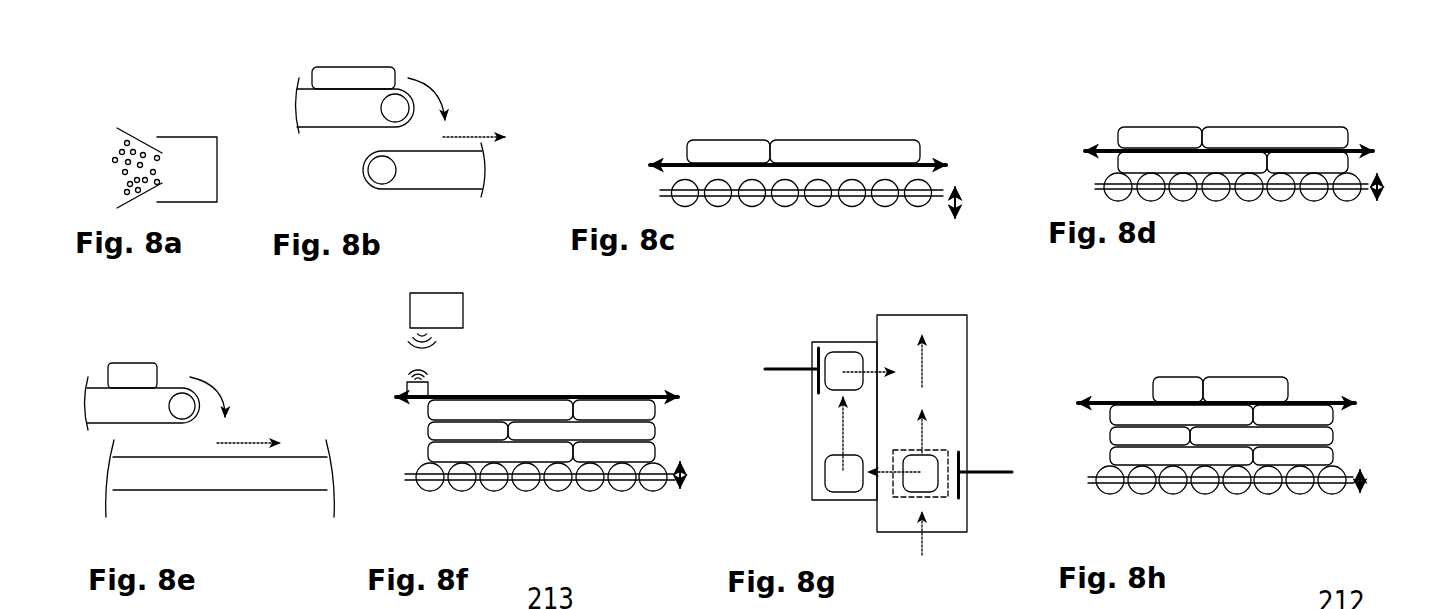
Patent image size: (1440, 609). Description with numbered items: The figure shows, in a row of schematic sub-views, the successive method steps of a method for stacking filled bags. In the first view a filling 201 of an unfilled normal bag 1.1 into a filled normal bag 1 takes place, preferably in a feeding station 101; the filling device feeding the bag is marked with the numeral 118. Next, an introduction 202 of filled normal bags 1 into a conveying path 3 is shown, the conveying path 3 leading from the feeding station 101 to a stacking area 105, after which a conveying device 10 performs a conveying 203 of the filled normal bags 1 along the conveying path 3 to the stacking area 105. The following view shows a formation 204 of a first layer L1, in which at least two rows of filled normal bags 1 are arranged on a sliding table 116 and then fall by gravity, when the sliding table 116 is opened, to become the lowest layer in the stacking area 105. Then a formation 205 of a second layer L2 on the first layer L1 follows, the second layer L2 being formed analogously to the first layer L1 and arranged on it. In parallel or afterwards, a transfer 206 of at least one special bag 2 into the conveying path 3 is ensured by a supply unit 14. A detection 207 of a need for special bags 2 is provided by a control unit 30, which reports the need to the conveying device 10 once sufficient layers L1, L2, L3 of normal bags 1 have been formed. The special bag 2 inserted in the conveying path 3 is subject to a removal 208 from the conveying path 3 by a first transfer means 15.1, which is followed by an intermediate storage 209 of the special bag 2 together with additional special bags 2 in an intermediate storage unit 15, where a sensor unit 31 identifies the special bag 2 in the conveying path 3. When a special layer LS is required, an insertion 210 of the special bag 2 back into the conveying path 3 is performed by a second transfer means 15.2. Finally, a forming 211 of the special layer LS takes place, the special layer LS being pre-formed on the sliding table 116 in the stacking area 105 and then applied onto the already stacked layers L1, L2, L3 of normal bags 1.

In FIG. 8A, the filling 201 is at (145, 62).
In FIG. 8A, the feeding device 118 is at (132, 137).
In FIG. 8A, the unfilled normal bag 1.1 is at (167, 137).
In FIG. 8B, the introduction 202 is at (343, 62).
In FIG. 8B, the filled normal bag 1 is at (382, 78).
In FIG. 8C, the filled normal bag 1 is at (788, 143).
In FIG. 8D, the filled normal bag 1 is at (1228, 137).
In FIG. 8B, the conveying 203 is at (482, 78).
In FIG. 8B, the conveying path 3 is at (460, 137).
In FIG. 8E, the conveying path 3 is at (233, 443).
In FIG. 8G, the conveying path 3 is at (927, 348).
In FIG. 8B, the feeding station 101 is at (342, 115).
In FIG. 8B, the conveying device 10 is at (432, 173).
In FIG. 8E, the conveying device 10 is at (187, 482).
In FIG. 8G, the conveying device 10 is at (957, 402).
In FIG. 8C, the formation of a first layer 204 is at (675, 82).
In FIG. 8C, the sliding table 116 is at (673, 160).
In FIG. 8D, the sliding table 116 is at (1108, 148).
In FIG. 8F, the sliding table 116 is at (478, 397).
In FIG. 8H, the sliding table 116 is at (1115, 400).
In FIG. 8C, the first layer L1 is at (912, 155).
In FIG. 8D, the first layer L1 is at (1333, 163).
In FIG. 8F, the first layer L1 is at (650, 453).
In FIG. 8H, the first layer L1 is at (1327, 457).
In FIG. 8C, the stacking area 105 is at (648, 193).
In FIG. 8D, the stacking area 105 is at (1078, 185).
In FIG. 8F, the stacking area 105 is at (397, 480).
In FIG. 8H, the stacking area 105 is at (1075, 485).
In FIG. 8D, the formation of a second layer 205 is at (1137, 93).
In FIG. 8D, the second layer L2 is at (1325, 135).
In FIG. 8F, the second layer L2 is at (437, 428).
In FIG. 8H, the second layer L2 is at (1117, 430).
In FIG. 8E, the supply unit 14 is at (93, 390).
In FIG. 8E, the special bag 2 is at (138, 370).
In FIG. 8G, the special bag 2 is at (838, 360).
In FIG. 8H, the special bag 2 is at (1232, 383).
In FIG. 8E, the transfer 206 is at (262, 347).
In FIG. 8F, the control unit 30 is at (457, 312).
In FIG. 8F, the detection 207 is at (668, 320).
In FIG. 8F, the third layer L3 is at (650, 412).
In FIG. 8H, the third layer L3 is at (1328, 415).
In FIG. 8G, the insertion 210 is at (822, 302).
In FIG. 8G, the second transfer means 15.2 is at (792, 350).
In FIG. 8G, the first transfer means 15.1 is at (975, 472).
In FIG. 8G, the sensor unit 31 is at (947, 493).
In FIG. 8G, the intermediate storage 209 is at (790, 414).
In FIG. 8G, the intermediate storage unit 15 is at (820, 487).
In FIG. 8G, the removal 208 is at (863, 505).
In FIG. 8H, the forming 211 is at (1157, 327).
In FIG. 8H, the special layer LS is at (1273, 382).